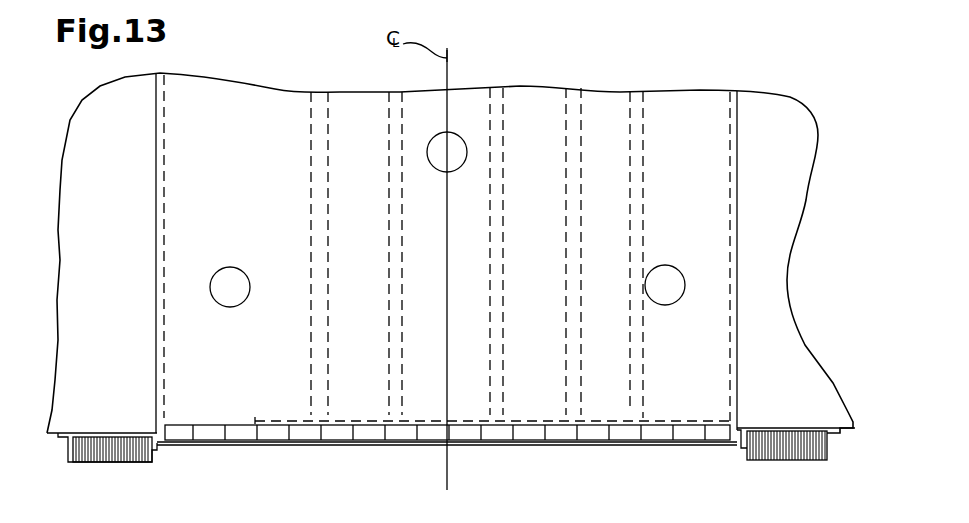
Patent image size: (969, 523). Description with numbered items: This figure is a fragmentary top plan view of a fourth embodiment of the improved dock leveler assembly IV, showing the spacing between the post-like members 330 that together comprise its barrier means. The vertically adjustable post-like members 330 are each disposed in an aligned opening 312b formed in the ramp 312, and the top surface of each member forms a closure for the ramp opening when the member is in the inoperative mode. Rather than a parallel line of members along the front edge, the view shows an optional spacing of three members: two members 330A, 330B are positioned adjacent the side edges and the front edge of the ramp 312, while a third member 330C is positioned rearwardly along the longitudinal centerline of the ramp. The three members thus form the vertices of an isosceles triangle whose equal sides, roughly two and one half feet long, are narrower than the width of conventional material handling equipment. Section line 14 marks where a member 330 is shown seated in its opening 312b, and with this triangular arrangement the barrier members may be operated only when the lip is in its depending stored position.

The post-like member 330 is at (232, 270).
The post-like member 330A is at (226, 307).
The post-like member 330B is at (664, 267).
The post-like member 330C is at (458, 133).
The ramp 312 is at (264, 395).
The opening 312b is at (244, 298).
The section line 14 is at (640, 117).
The dock leveler assembly IV is at (622, 63).